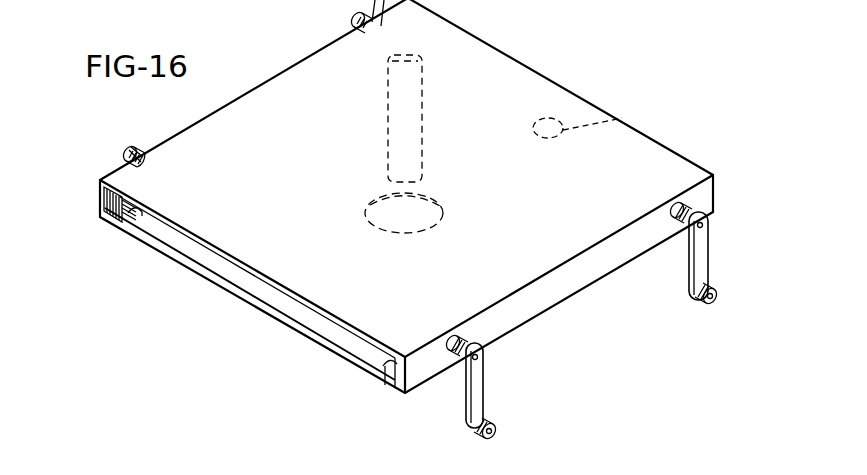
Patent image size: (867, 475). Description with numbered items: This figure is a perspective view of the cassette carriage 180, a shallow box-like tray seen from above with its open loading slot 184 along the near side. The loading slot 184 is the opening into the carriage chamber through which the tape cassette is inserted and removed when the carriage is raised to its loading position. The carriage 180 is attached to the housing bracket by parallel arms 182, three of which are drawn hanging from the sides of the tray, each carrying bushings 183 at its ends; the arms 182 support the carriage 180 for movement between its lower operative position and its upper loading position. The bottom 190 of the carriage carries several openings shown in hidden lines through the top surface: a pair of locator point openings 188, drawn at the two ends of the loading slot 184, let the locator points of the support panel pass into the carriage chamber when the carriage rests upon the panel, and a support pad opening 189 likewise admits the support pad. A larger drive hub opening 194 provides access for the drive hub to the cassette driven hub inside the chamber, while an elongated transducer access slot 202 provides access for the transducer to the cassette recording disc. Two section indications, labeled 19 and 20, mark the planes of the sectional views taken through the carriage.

The section line 19- 19 is at (122, 133).
The section line 20- 20 is at (462, 122).
The cassette carriage 180 is at (555, 262).
The parallel arms 182 is at (353, 23).
The bushings 183 is at (140, 147).
The loading slot 184 is at (200, 258).
The locator point openings 188 is at (150, 215).
The support pad opening 189 is at (622, 118).
The bottom 190 is at (250, 305).
The drive hub opening 194 is at (365, 213).
The transducer access slot 202 is at (388, 135).